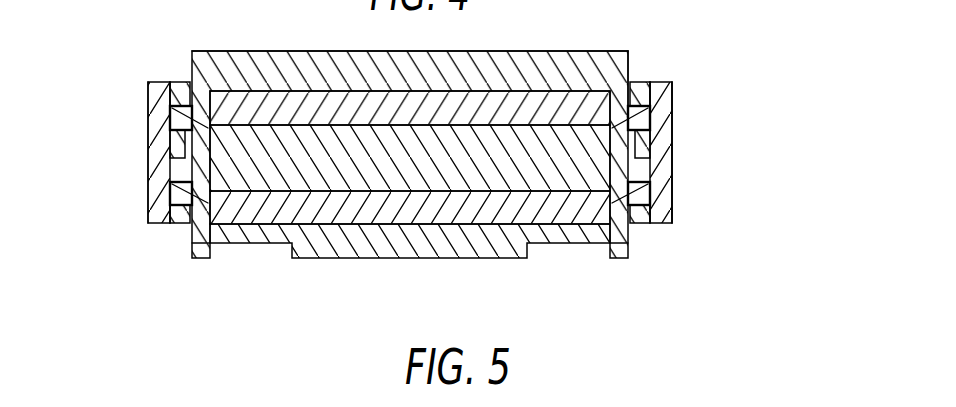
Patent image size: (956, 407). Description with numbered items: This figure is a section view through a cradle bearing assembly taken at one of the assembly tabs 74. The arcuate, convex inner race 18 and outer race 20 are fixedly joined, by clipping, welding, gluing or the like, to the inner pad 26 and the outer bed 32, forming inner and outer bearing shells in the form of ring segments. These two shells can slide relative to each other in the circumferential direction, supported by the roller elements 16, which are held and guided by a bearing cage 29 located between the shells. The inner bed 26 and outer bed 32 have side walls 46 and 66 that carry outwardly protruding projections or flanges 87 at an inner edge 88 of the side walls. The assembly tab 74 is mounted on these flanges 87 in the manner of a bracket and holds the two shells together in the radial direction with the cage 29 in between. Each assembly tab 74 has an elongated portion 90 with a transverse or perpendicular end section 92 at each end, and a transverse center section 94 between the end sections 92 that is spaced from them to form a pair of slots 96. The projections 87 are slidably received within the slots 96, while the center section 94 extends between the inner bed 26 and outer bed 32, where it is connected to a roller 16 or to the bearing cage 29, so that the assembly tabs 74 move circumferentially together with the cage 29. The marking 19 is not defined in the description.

The roller elements 16 is at (400, 163).
The inner race 18 is at (270, 51).
The housing 19 is at (605, 51).
The outer race 20 is at (280, 210).
The inner pad 26 is at (500, 50).
The bearing cage 29 is at (675, 173).
The outer bed 32 is at (464, 260).
The side wall 46 is at (197, 51).
The side wall 66 is at (197, 243).
The assembly tab 74 is at (411, 151).
The flange 87 is at (150, 136).
The inner edge 88 is at (169, 97).
The elongated portion 90 is at (150, 144).
The end section 92 is at (152, 97).
The center section 94 is at (150, 156).
The slot 96 is at (168, 112).